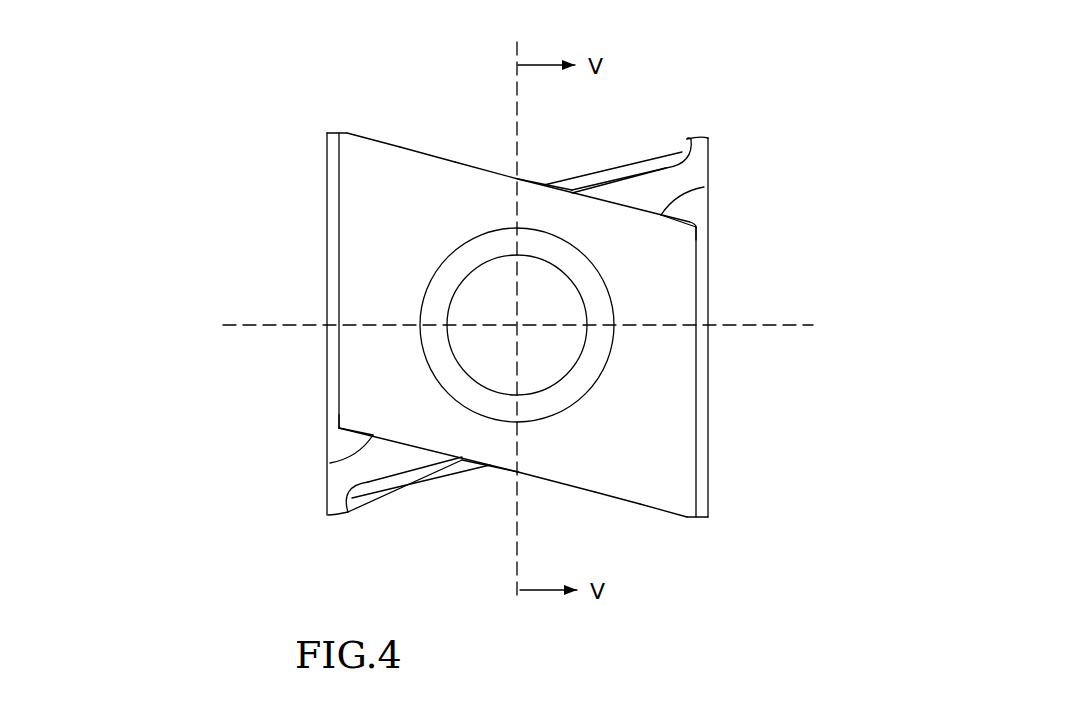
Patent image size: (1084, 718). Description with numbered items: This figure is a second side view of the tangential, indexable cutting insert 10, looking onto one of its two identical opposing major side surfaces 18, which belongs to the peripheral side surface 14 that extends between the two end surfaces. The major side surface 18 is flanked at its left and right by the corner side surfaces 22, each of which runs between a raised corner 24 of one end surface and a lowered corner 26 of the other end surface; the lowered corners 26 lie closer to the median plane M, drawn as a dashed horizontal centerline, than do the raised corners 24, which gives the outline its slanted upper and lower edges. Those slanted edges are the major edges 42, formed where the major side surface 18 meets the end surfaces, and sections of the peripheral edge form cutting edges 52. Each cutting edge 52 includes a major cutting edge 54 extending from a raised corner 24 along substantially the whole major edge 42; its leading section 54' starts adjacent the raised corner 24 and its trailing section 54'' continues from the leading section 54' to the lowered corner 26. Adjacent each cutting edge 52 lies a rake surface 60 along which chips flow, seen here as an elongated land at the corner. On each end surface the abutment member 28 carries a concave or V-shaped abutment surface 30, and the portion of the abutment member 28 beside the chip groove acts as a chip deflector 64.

The cutting insert 10 is at (258, 58).
The peripheral side surface 14 is at (670, 379).
The major side surface 18 is at (680, 452).
The corner side surface 22 is at (702, 293).
The raised corner 24 is at (320, 135).
The lowered corner 26 is at (708, 223).
The abutment member 28 is at (583, 186).
The abutment surface 30 is at (616, 184).
The major edge 42 is at (434, 152).
The cutting edge 52 is at (356, 133).
The major cutting edge 54 is at (525, 313).
The leading section 54' is at (520, 316).
The trailing section 54'' is at (522, 320).
The rake surface 60 is at (655, 150).
The chip deflector 64 is at (682, 176).
The median plane M is at (768, 323).